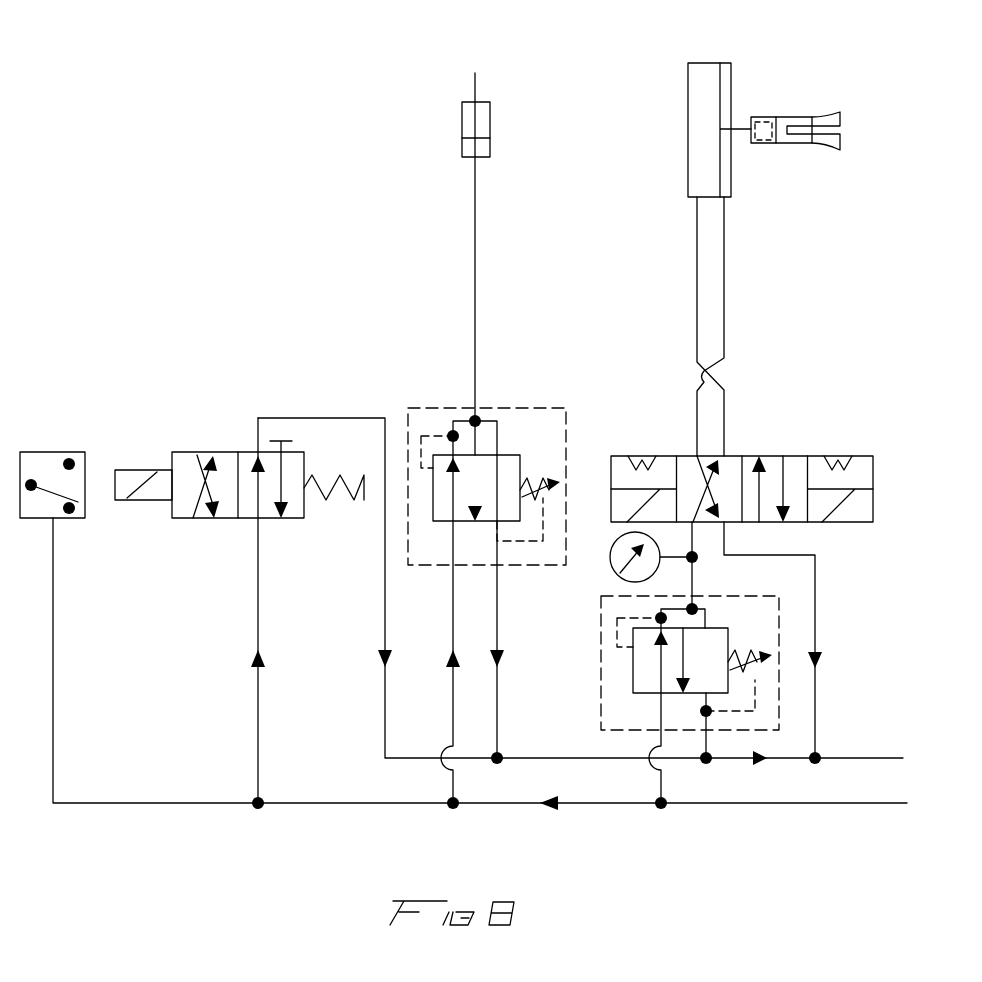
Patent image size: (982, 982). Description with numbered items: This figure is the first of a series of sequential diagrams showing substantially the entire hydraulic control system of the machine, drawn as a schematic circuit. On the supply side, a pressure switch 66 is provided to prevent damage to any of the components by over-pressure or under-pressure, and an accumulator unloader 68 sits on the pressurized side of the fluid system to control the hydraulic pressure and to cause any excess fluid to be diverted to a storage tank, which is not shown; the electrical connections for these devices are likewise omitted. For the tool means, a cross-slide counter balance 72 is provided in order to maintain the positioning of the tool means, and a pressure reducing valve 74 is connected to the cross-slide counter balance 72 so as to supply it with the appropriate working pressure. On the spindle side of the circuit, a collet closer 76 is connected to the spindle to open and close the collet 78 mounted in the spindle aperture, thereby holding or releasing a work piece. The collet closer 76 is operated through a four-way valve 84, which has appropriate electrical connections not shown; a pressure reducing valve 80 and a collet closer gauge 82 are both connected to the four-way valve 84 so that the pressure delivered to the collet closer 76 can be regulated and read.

The pressure switch 66 is at (52, 452).
The accumulator unloader 68 is at (228, 452).
The cross-slide counter balance 72 is at (485, 112).
The pressure reducing valve 74 is at (505, 405).
The collet closer 76 is at (706, 64).
The collet 78 is at (777, 118).
The pressure reducing valve 80 is at (596, 682).
The collet closer gauge 82 is at (620, 574).
The four-way valve 84 is at (810, 455).